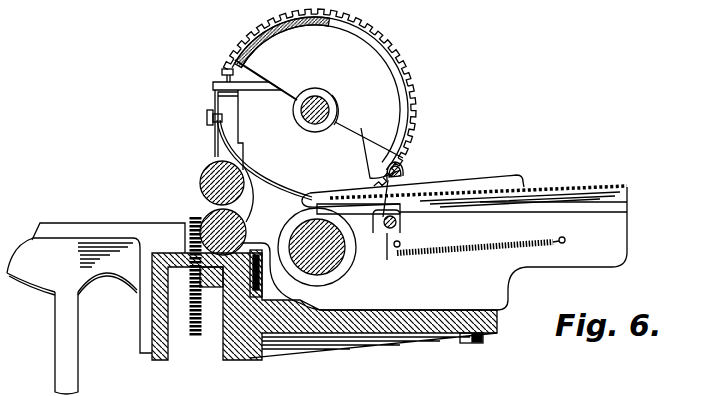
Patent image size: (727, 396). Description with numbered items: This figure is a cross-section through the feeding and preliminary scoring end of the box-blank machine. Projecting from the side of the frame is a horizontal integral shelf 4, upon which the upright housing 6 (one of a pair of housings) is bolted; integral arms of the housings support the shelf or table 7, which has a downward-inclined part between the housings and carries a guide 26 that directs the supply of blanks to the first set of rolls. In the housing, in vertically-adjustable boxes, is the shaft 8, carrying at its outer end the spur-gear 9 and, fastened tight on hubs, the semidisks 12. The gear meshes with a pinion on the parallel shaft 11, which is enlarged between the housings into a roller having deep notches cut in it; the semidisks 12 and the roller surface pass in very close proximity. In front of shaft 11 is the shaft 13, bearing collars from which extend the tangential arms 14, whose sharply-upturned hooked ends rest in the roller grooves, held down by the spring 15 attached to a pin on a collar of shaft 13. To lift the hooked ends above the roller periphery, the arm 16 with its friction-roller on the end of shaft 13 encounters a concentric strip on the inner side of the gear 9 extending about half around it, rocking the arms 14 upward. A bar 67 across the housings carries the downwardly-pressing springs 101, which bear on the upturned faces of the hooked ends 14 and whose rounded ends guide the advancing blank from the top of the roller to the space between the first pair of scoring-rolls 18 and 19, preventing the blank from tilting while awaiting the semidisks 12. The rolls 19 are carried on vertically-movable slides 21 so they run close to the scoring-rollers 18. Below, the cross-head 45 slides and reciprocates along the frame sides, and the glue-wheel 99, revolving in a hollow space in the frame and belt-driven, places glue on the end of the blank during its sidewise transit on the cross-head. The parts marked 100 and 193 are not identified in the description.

The horizontal integral shelf 4 is at (497, 322).
The upright housing 6 is at (453, 228).
The shelf or table 7 is at (627, 186).
The shaft 8 is at (300, 110).
The spur-gear 9 is at (397, 57).
The parallel shaft 11 is at (309, 294).
The semidisk 12 is at (368, 96).
The shaft 13 is at (397, 222).
The tangential arm 14 is at (353, 207).
The spring 15 is at (472, 251).
The arm 16 is at (405, 174).
The scoring-roller 18 is at (252, 213).
The scoring-roll 19 is at (200, 160).
The vertically-movable slide 21 is at (232, 120).
The guide 26 is at (514, 172).
The cross-head 45 is at (96, 308).
The bar 67 is at (208, 107).
The glue-wheel 99 is at (201, 288).
The clamp block 100 is at (257, 294).
The downwardly-pressing spring 101 is at (259, 176).
The segment 193 is at (369, 150).